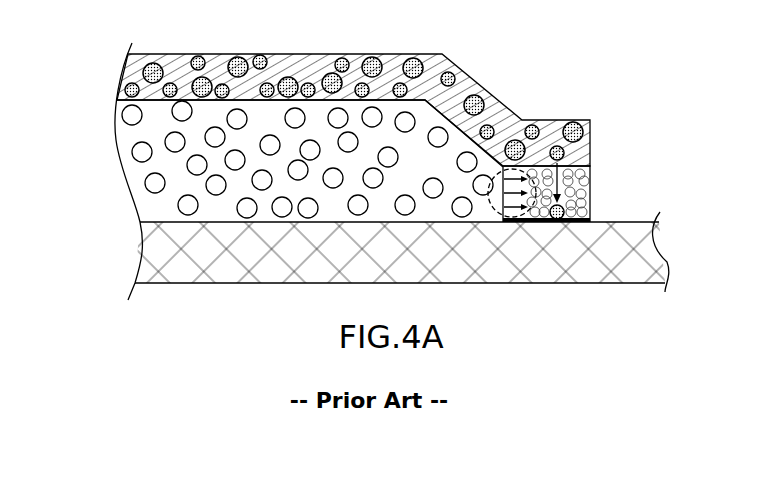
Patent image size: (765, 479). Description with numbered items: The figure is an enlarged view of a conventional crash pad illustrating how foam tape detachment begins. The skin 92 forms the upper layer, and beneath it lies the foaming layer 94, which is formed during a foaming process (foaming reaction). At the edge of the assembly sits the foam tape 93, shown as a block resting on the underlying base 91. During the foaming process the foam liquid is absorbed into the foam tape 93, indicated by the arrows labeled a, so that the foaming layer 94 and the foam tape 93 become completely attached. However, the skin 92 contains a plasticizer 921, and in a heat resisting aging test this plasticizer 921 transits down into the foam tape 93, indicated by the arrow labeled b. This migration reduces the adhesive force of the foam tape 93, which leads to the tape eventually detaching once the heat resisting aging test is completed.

The substrate 91 is at (150, 256).
The skin 92 is at (323, 83).
The plasticizer 921 is at (414, 66).
The foam tape 93 is at (579, 192).
The foaming layer 94 is at (140, 154).